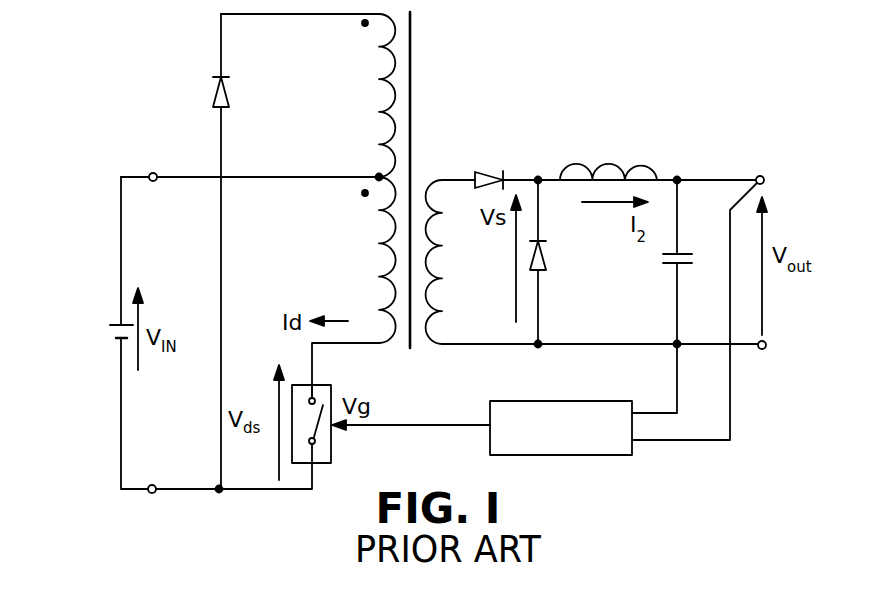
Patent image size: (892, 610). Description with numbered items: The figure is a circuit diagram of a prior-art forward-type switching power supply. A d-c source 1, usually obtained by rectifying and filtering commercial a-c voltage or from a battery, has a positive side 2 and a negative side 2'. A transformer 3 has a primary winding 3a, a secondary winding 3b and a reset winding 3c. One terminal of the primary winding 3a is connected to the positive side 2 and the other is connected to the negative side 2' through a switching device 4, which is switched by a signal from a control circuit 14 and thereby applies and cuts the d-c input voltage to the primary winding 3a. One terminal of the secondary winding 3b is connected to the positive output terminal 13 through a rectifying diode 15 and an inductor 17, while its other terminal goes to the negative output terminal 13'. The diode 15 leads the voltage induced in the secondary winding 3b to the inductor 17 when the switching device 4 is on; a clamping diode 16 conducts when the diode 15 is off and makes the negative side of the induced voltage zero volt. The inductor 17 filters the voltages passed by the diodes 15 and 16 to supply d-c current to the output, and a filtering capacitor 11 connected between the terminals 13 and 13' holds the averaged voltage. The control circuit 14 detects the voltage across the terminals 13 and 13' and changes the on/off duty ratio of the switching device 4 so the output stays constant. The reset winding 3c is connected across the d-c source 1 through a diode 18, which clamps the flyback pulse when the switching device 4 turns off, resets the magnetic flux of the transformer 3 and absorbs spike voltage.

The d-c source 1 is at (117, 332).
The positive side terminal 2 is at (144, 156).
The negative side terminal 2' is at (147, 515).
The transformer 3 is at (410, 84).
The primary winding 3a is at (380, 255).
The secondary winding 3b is at (433, 288).
The reset winding 3c is at (379, 98).
The switching device 4 is at (332, 447).
The filtering capacitor 11 is at (663, 256).
The positive output terminal 13 is at (771, 153).
The negative output terminal 13' is at (769, 372).
The control circuit 14 is at (573, 455).
The rectifying diode 15 is at (493, 175).
The clamping diode 16 is at (544, 262).
The inductor 17 is at (607, 164).
The diode 18 is at (226, 98).